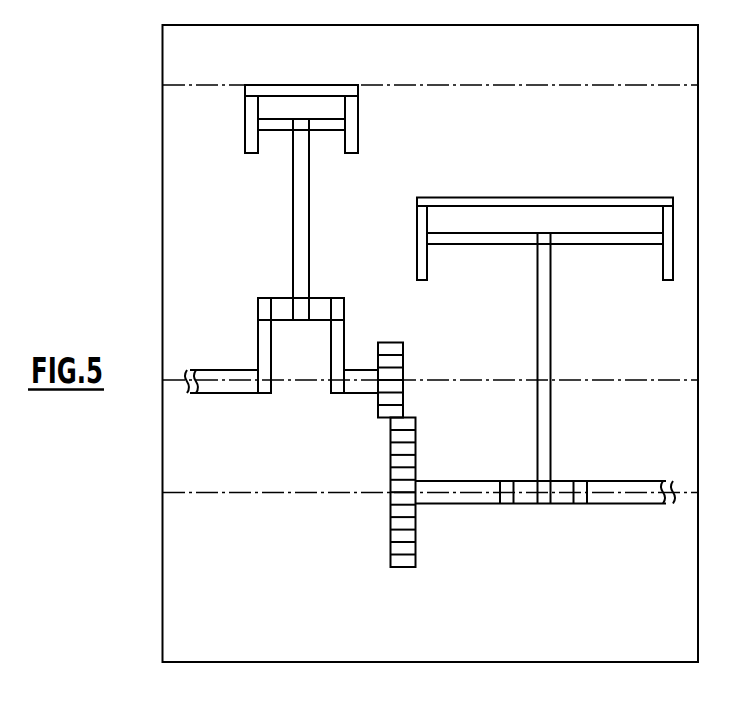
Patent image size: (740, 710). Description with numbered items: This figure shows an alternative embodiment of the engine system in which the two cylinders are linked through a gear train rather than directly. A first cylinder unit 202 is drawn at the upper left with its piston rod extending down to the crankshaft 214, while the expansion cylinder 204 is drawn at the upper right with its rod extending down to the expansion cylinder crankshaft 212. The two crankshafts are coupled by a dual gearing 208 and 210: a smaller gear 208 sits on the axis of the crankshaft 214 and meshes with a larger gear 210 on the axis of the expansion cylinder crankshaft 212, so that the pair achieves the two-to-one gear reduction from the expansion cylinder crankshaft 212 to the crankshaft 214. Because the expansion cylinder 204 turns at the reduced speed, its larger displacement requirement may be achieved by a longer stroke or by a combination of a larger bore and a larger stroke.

The first motor/bracket assembly 202 is at (322, 85).
The expansion cylinder 204 is at (538, 198).
The dual gearing 208 is at (405, 373).
The dual gearing 210 is at (417, 448).
The expansion cylinder crankshaft 212 is at (485, 504).
The crankshaft 214 is at (225, 393).